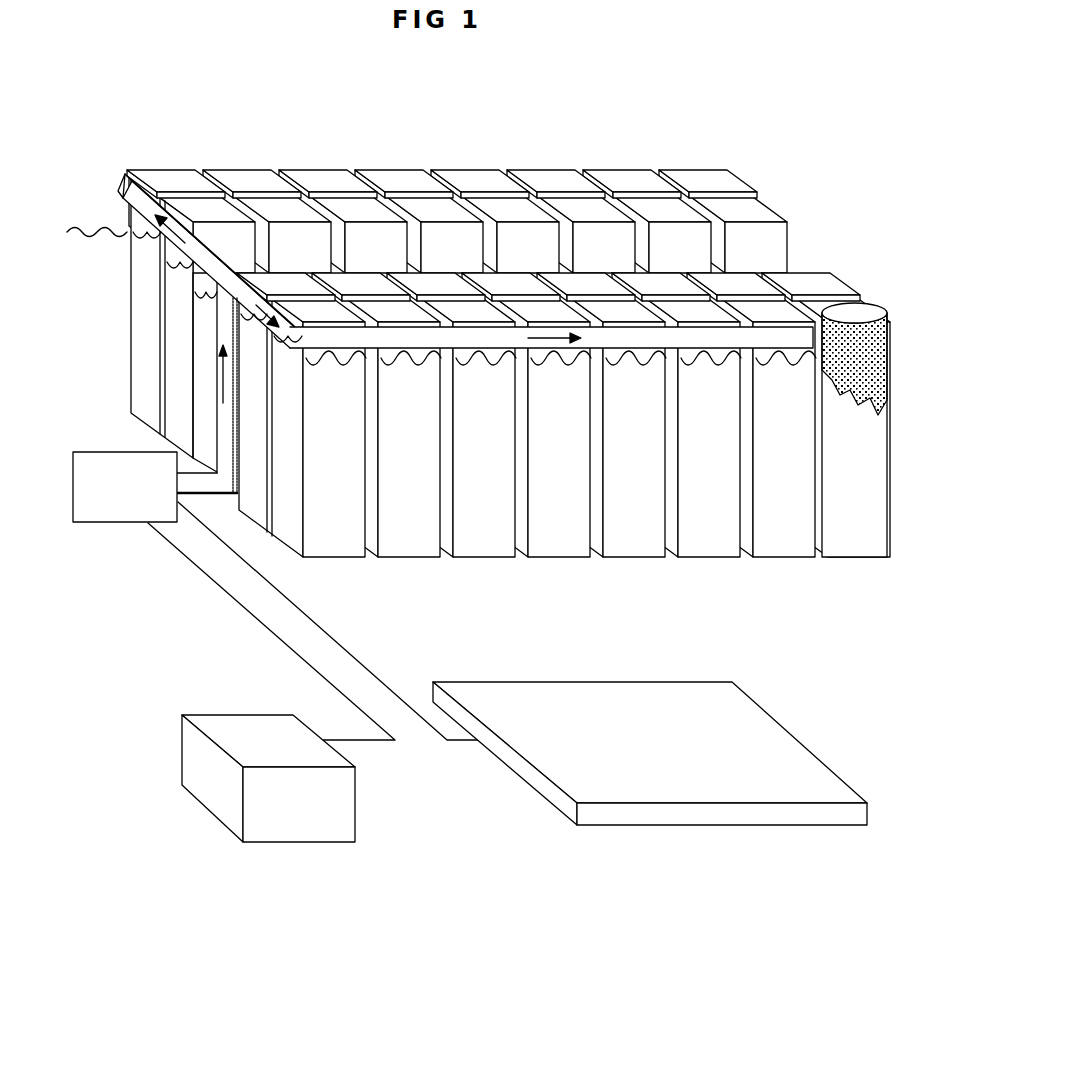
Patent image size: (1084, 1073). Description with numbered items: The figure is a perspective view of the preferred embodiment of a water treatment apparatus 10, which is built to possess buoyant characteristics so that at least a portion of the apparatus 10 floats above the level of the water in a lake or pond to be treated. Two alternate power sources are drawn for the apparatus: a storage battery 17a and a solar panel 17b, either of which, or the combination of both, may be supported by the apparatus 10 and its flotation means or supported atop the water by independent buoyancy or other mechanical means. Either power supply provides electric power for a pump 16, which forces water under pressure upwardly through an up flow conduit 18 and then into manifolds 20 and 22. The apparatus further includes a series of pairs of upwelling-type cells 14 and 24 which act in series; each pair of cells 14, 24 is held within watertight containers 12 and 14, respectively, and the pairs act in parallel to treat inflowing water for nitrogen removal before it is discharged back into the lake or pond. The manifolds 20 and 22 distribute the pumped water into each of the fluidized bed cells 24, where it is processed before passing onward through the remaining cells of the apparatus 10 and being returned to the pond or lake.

The water treatment apparatus 10 is at (478, 481).
The watertight container 12 is at (690, 171).
The upwelling-type cell 14 is at (773, 207).
The pump 16 is at (133, 523).
The battery 17a is at (296, 843).
The solar panel 17b is at (697, 826).
The up flow conduit 18 is at (223, 420).
The manifold 20 is at (498, 352).
The manifold 22 is at (118, 189).
The fluidized bed cell 24 is at (875, 307).